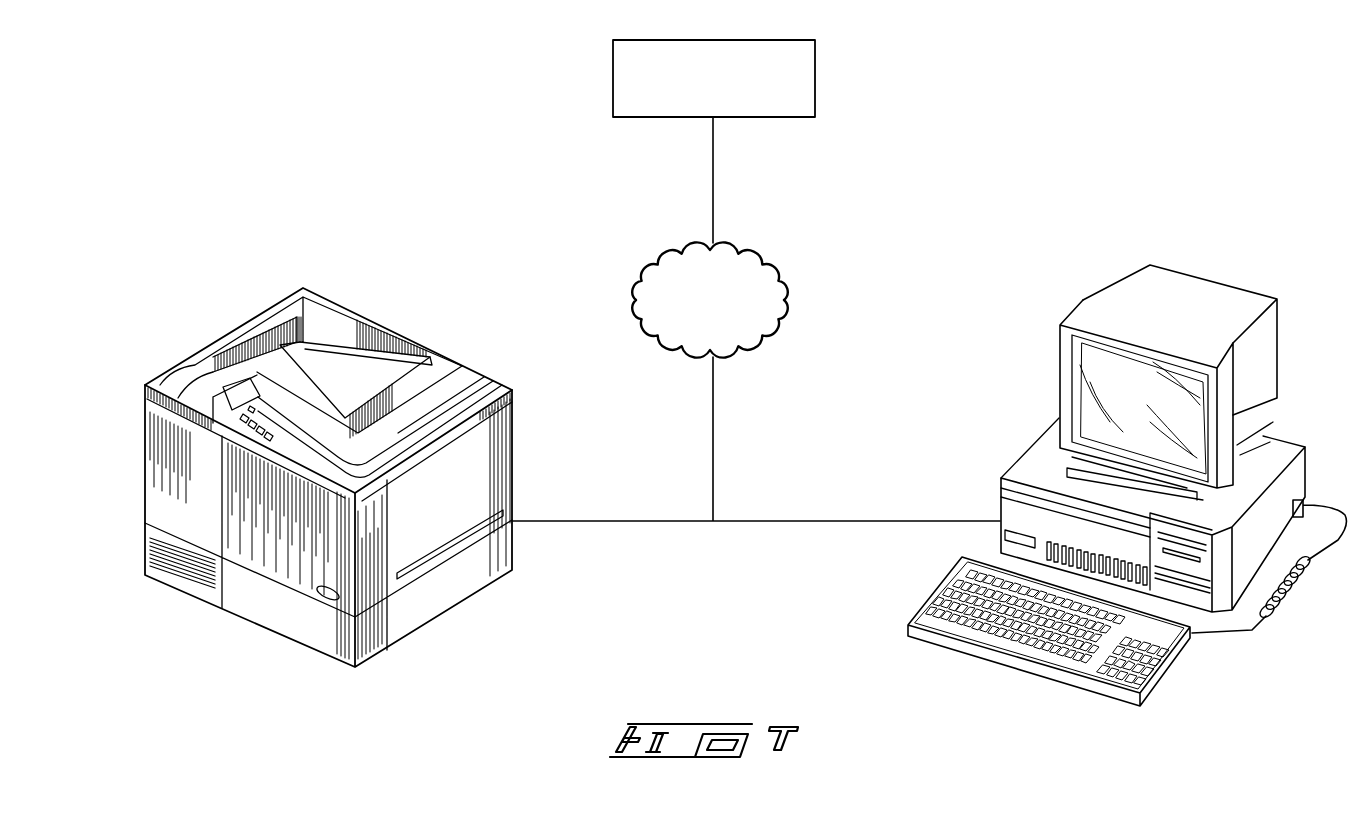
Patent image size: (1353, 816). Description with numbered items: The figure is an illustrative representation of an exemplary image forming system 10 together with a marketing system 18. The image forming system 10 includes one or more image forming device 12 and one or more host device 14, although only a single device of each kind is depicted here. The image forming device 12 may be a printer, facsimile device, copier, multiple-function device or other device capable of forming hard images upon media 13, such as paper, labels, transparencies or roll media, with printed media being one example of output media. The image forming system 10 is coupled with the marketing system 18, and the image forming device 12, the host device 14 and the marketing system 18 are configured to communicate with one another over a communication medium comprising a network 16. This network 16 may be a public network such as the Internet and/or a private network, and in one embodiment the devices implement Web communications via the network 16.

The image forming system 10 is at (122, 338).
The image forming device 12 is at (284, 477).
The media 13 is at (328, 380).
The host device 14 is at (990, 503).
The network 16 is at (770, 259).
The marketing system 18 is at (783, 118).